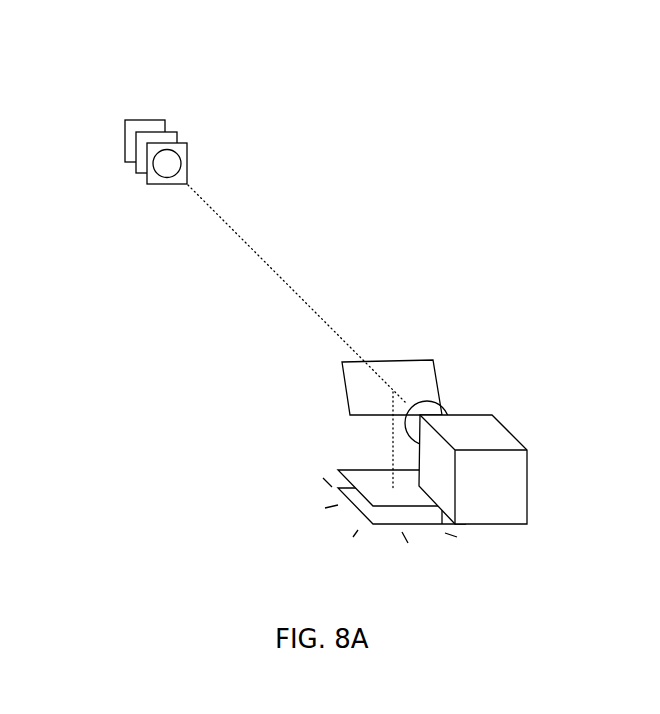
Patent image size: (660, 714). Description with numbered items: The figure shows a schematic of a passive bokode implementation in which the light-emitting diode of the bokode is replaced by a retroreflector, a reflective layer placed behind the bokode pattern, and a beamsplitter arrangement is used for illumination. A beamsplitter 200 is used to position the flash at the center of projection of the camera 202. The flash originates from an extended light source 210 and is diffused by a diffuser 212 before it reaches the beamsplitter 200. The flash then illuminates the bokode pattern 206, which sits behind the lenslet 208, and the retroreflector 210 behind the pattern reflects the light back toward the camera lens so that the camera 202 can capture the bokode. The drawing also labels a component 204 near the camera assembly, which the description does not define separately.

The beamsplitter 200 is at (430, 375).
The camera 202 is at (513, 487).
The camera lens unit 204 is at (189, 157).
The bokode pattern 206 is at (174, 137).
The lenslet 208 is at (165, 120).
The retroreflector 210 is at (363, 514).
The diffuser 212 is at (349, 470).